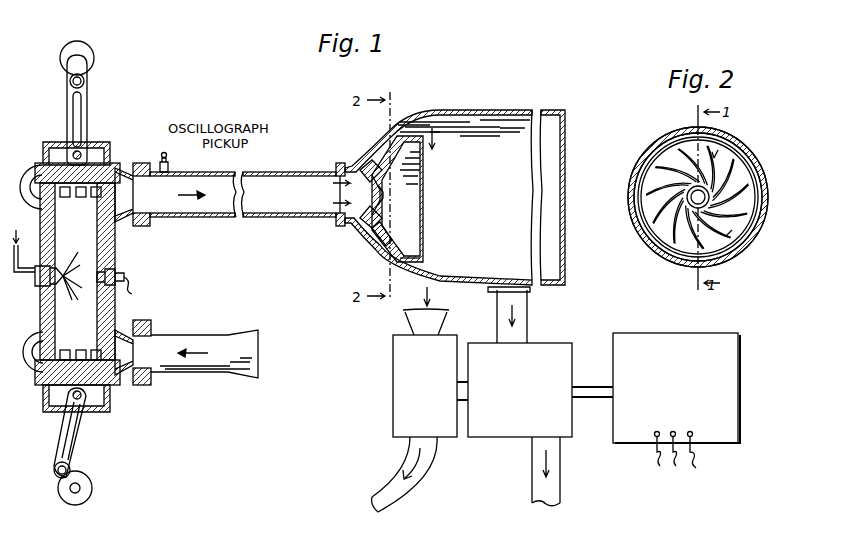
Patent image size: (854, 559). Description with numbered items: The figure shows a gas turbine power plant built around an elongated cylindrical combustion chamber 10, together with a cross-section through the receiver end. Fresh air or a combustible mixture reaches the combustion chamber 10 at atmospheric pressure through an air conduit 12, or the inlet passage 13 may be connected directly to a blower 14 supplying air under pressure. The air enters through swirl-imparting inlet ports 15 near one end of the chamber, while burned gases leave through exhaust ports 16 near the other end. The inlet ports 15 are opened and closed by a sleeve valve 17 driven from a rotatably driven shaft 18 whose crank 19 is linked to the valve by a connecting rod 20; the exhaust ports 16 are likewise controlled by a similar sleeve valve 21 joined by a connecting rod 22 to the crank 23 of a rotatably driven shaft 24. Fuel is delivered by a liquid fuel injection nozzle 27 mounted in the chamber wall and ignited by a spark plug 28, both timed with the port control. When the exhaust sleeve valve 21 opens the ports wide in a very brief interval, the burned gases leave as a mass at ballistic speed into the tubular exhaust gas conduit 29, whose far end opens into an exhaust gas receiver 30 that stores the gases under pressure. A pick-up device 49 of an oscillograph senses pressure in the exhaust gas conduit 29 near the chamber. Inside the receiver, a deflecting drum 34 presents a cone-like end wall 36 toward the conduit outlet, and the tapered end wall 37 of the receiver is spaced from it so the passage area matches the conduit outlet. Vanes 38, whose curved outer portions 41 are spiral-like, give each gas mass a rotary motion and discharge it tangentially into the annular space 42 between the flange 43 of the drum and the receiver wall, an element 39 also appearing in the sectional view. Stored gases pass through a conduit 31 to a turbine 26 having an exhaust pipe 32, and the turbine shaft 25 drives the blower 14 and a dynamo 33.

In FIG. 1, the combustion chamber 10 is at (112, 262).
In FIG. 1, the air conduit 12 is at (212, 370).
In FIG. 1, the inlet passage 13 is at (128, 350).
In FIG. 1, the blower 14 is at (406, 402).
In FIG. 1, the inlet ports 15 is at (40, 372).
In FIG. 1, the exhaust ports 16 is at (110, 190).
In FIG. 1, the sleeve valve 17 is at (43, 410).
In FIG. 1, the rotatably driven shaft 18 is at (90, 480).
In FIG. 1, the crank 19 is at (60, 478).
In FIG. 1, the connecting rod 20 is at (60, 435).
In FIG. 1, the sleeve valve 21 is at (104, 146).
In FIG. 1, the connecting rod 22 is at (87, 108).
In FIG. 1, the crank 23 is at (84, 62).
In FIG. 1, the rotatably driven shaft 24 is at (90, 45).
In FIG. 1, the turbine shaft 25 is at (462, 382).
In FIG. 1, the turbine 26 is at (552, 352).
In FIG. 1, the liquid fuel injection nozzle 27 is at (30, 282).
In FIG. 1, the spark plug 28 is at (124, 272).
In FIG. 1, the exhaust gas conduit 29 is at (262, 172).
In FIG. 1, the exhaust gas receiver 30 is at (470, 108).
In FIG. 2, the exhaust gas receiver 30 is at (650, 135).
In FIG. 1, the conduit 31 is at (522, 316).
In FIG. 1, the exhaust pipe 32 is at (556, 486).
In FIG. 1, the dynamo 33 is at (680, 346).
In FIG. 1, the deflecting drum 34 is at (425, 180).
In FIG. 2, the deflecting drum 34 is at (652, 163).
In FIG. 1, the cone-like end wall 36 is at (384, 216).
In FIG. 2, the cone-like end wall 36 is at (650, 218).
In FIG. 1, the end wall 37 is at (378, 242).
In FIG. 1, the vanes 38 is at (352, 160).
In FIG. 2, the vanes 38 is at (714, 150).
In FIG. 2, the vane 39 is at (730, 236).
In FIG. 2, the outer portions of the vanes 41 is at (662, 236).
In FIG. 1, the annular space 42 is at (408, 135).
In FIG. 2, the annular space 42 is at (636, 210).
In FIG. 1, the flange 43 is at (415, 262).
In FIG. 1, the pick-up device 49 is at (168, 158).